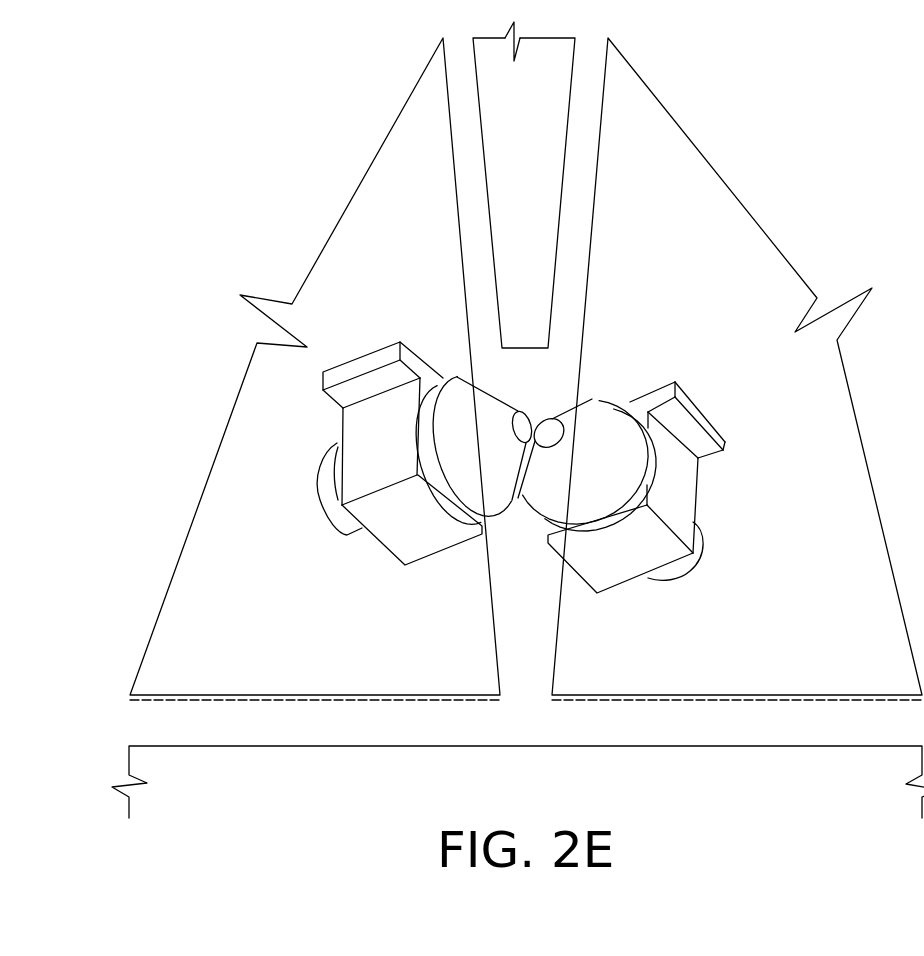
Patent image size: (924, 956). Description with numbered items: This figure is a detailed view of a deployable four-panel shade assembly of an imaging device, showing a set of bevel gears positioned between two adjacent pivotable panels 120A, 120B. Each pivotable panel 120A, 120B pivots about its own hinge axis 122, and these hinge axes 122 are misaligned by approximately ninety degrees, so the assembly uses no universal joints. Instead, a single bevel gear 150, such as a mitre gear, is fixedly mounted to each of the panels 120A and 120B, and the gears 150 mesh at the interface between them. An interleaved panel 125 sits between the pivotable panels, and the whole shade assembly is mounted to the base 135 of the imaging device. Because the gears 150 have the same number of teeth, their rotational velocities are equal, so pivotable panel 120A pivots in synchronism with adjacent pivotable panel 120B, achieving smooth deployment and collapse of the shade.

The pivotable panel 120A is at (425, 247).
The pivotable panel 120B is at (717, 256).
The interleaved panel 125 is at (558, 148).
The bevel gears 150 is at (363, 367).
The hinge axes 122 is at (377, 697).
The base 135 is at (757, 747).